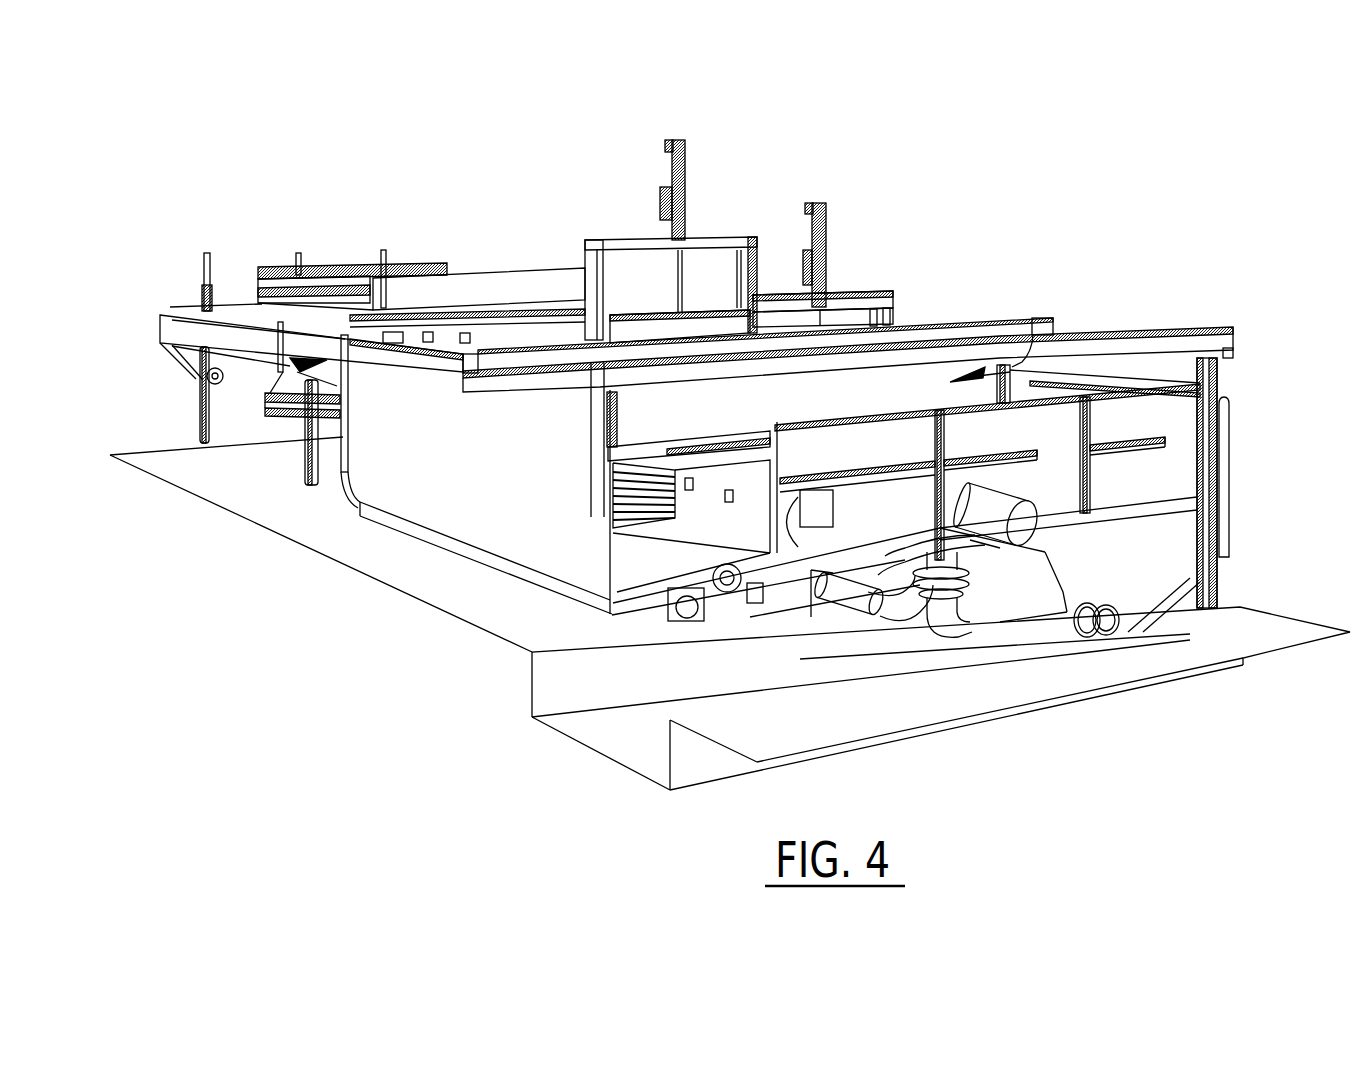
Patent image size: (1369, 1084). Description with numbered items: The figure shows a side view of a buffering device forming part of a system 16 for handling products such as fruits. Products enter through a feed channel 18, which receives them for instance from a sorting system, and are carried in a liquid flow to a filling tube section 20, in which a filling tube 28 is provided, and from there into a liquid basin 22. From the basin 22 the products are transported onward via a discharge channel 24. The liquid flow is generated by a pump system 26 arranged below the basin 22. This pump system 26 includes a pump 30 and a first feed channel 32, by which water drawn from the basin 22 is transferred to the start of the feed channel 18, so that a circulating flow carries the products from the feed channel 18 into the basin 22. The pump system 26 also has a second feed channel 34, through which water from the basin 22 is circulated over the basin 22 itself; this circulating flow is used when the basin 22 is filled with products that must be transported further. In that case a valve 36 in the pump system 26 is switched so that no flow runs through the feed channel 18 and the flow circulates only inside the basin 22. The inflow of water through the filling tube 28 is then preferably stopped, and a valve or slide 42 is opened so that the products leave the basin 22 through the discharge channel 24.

The system 16 is at (1250, 179).
The feed channel 18 is at (505, 262).
The filling tube section 20 is at (320, 359).
The liquid basin 22 is at (440, 462).
The discharge channel 24 is at (1036, 318).
The pump system 26 is at (262, 505).
The filling tube 28 is at (792, 180).
The pump 30 is at (1020, 632).
The first feed channel 32 is at (870, 592).
The second feed channel 34 is at (840, 596).
The valve 36 is at (903, 675).
The valve or slide 42 is at (700, 322).